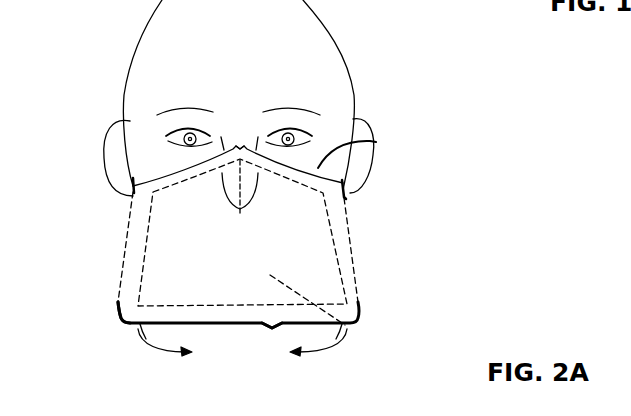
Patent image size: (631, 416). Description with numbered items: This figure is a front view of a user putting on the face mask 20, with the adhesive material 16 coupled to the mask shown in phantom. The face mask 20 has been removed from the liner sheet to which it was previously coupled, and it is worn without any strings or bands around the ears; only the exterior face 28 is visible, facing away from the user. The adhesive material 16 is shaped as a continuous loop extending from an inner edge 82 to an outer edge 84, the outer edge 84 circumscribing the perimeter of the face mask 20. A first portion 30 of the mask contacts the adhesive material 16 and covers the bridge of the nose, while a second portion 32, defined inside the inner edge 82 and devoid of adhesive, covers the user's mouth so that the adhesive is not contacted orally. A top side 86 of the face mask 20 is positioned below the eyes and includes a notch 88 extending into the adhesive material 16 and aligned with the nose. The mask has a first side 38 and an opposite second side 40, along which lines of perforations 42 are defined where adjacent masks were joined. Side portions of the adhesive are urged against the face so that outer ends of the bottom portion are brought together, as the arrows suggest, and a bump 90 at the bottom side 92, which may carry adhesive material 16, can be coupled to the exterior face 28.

The adhesive material 16 is at (137, 233).
The face mask 20 is at (150, 286).
The exterior face 28 is at (310, 262).
The first portion 30 is at (347, 210).
The second portion 32 is at (360, 317).
The first side 38 is at (312, 247).
The second side 40 is at (133, 216).
The lines of perforations 42 is at (123, 270).
The inner edge 82 is at (208, 307).
The outer edge 84 is at (222, 323).
The top side 86 is at (376, 142).
The notch 88 is at (240, 143).
The bump 90 is at (272, 328).
The bottom side 92 is at (253, 323).